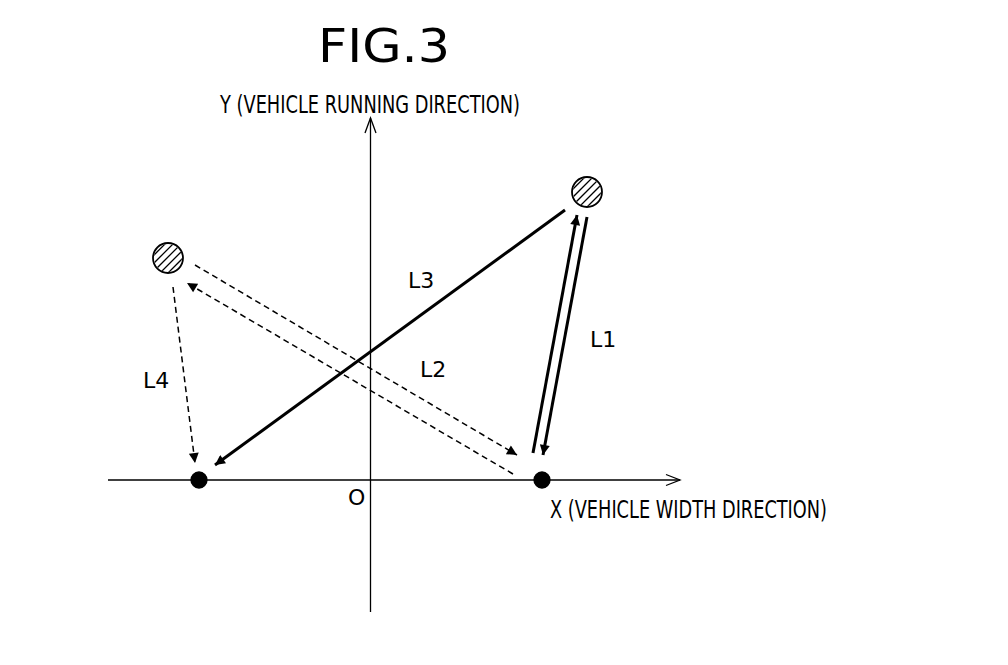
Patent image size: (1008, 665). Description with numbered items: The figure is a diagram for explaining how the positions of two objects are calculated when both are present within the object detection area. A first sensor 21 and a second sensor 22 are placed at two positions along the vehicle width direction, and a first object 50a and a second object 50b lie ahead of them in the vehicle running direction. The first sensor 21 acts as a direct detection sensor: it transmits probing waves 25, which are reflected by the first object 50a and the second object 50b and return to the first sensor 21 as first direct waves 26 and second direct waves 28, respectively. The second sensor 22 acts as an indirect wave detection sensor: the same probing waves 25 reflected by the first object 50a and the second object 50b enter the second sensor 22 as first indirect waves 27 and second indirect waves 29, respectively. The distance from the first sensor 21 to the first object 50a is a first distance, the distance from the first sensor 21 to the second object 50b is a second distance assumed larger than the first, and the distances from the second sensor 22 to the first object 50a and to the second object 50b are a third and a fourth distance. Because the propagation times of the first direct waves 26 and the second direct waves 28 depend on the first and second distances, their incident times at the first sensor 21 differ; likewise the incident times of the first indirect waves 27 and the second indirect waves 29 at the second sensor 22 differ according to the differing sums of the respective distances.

The first object 50a is at (575, 182).
The second object 50b is at (156, 248).
The first sensor 21 is at (550, 476).
The second sensor 22 is at (193, 475).
The probing waves 25 is at (562, 283).
The first direct waves 26 is at (578, 282).
The first indirect waves 27 is at (506, 249).
The second direct waves 28 is at (473, 432).
The second indirect waves 29 is at (178, 330).